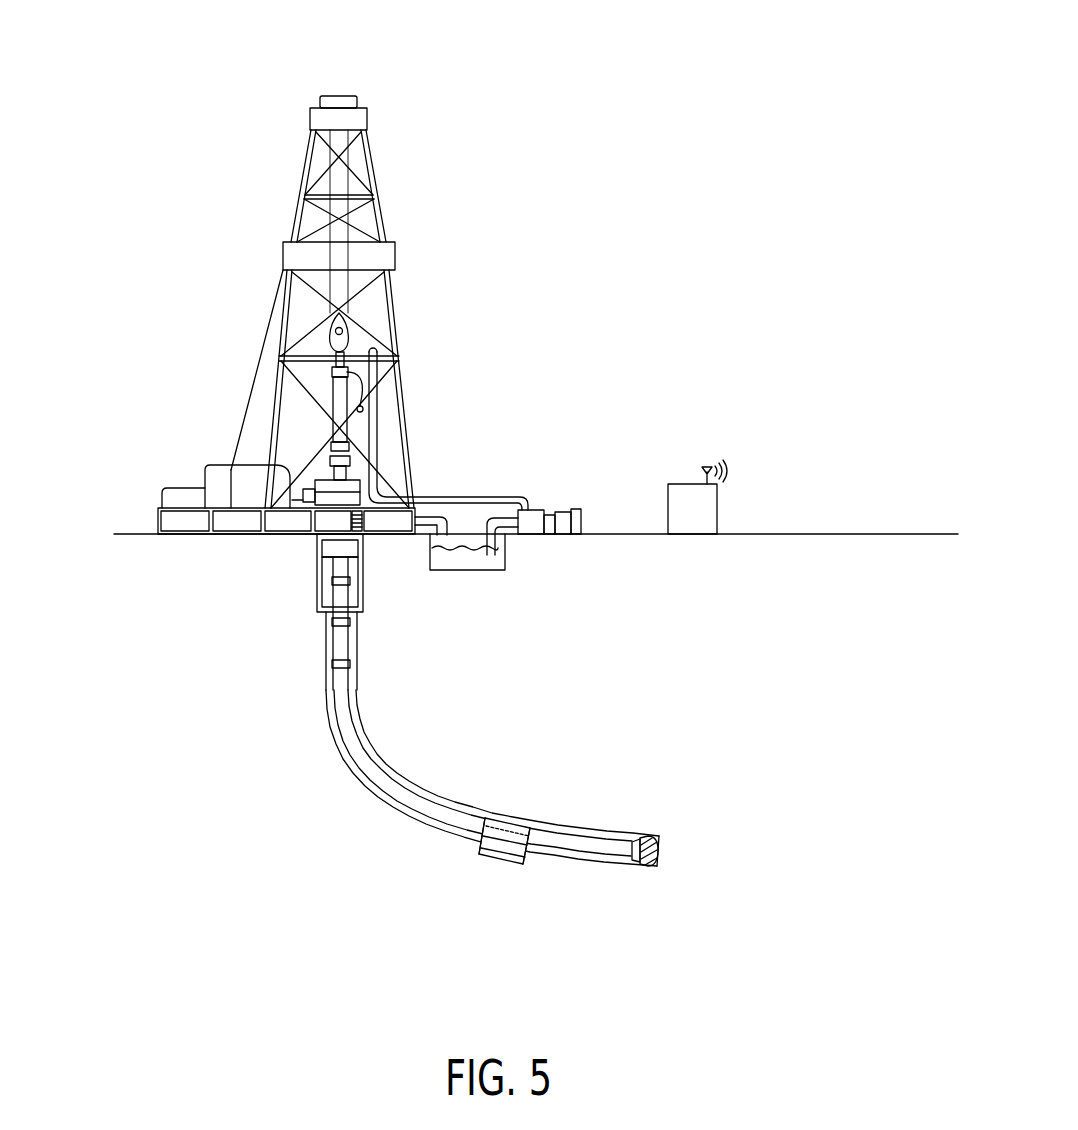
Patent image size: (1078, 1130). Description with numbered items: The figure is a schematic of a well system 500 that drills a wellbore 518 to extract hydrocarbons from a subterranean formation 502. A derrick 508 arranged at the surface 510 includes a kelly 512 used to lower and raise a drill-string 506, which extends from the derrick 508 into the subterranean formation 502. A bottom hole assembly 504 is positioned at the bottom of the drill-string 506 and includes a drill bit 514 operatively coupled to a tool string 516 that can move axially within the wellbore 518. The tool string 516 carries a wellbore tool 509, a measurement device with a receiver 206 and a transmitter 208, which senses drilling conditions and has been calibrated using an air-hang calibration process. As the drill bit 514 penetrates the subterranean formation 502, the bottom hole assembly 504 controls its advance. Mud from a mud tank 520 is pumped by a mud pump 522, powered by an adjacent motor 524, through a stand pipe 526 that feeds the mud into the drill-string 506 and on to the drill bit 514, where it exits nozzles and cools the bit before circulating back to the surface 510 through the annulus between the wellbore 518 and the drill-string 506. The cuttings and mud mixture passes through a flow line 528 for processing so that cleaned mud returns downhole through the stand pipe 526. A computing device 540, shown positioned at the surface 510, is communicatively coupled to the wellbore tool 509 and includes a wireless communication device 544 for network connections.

The well system 500 is at (116, 80).
The subterranean formation 502 is at (142, 590).
The bottom hole assembly 504 is at (586, 843).
The drill-string 506 is at (341, 688).
The derrick 508 is at (285, 320).
The wellbore tool 509 is at (506, 826).
The surface 510 is at (124, 532).
The kelly 512 is at (346, 332).
The drill bit 514 is at (660, 849).
The tool string 516 is at (630, 824).
The wellbore 518 is at (326, 654).
The mud tank 520 is at (472, 562).
The mud pump 522 is at (536, 508).
The motor 524 is at (581, 509).
The stand pipe 526 is at (379, 418).
The flow line 528 is at (446, 512).
The computing device 540 is at (680, 483).
The communication device 544 is at (726, 460).
The receiver 206 is at (520, 862).
The transmitter 208 is at (486, 852).